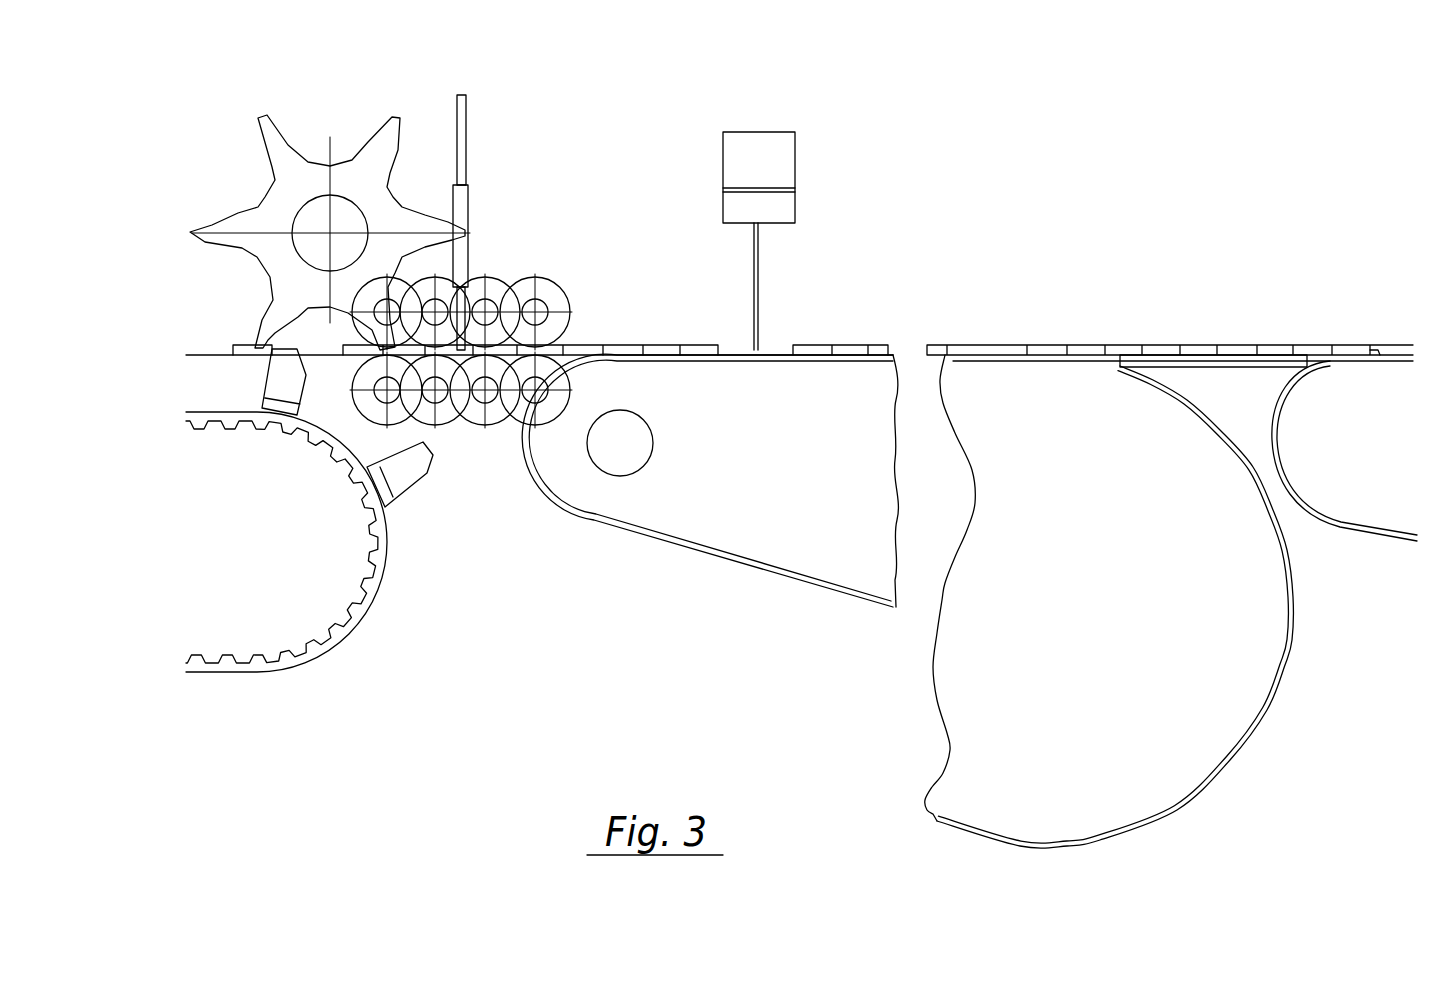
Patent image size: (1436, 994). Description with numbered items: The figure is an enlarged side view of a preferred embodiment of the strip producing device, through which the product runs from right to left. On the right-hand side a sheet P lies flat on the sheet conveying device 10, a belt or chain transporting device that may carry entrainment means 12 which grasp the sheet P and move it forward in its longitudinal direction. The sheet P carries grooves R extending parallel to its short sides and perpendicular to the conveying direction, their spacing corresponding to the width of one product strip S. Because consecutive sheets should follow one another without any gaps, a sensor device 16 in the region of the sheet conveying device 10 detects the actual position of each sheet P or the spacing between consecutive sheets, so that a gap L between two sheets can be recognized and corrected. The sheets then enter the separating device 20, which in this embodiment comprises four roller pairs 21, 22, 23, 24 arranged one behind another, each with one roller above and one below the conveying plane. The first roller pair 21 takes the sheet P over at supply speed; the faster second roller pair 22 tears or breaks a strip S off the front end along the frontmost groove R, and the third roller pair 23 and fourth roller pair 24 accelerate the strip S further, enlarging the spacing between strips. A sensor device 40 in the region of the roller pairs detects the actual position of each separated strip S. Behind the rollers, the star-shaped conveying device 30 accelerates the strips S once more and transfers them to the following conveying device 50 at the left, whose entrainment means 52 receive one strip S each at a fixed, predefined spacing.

The sheet conveying device 10 is at (747, 517).
The entrainment means 12 is at (1378, 352).
The sensor device 16 is at (758, 288).
The separating device 20 is at (491, 158).
The first roller pair 21 is at (543, 288).
The second roller pair 22 is at (483, 287).
The third roller pair 23 is at (445, 410).
The fourth roller pair 24 is at (378, 408).
The star-shaped conveying device 30 is at (290, 158).
The sensor device 40 is at (466, 200).
The following conveying device 50 is at (375, 578).
The entrainment means 52 is at (288, 378).
The sheet P is at (620, 347).
The groove R is at (1292, 352).
The product strip S is at (245, 347).
The gap L is at (735, 350).